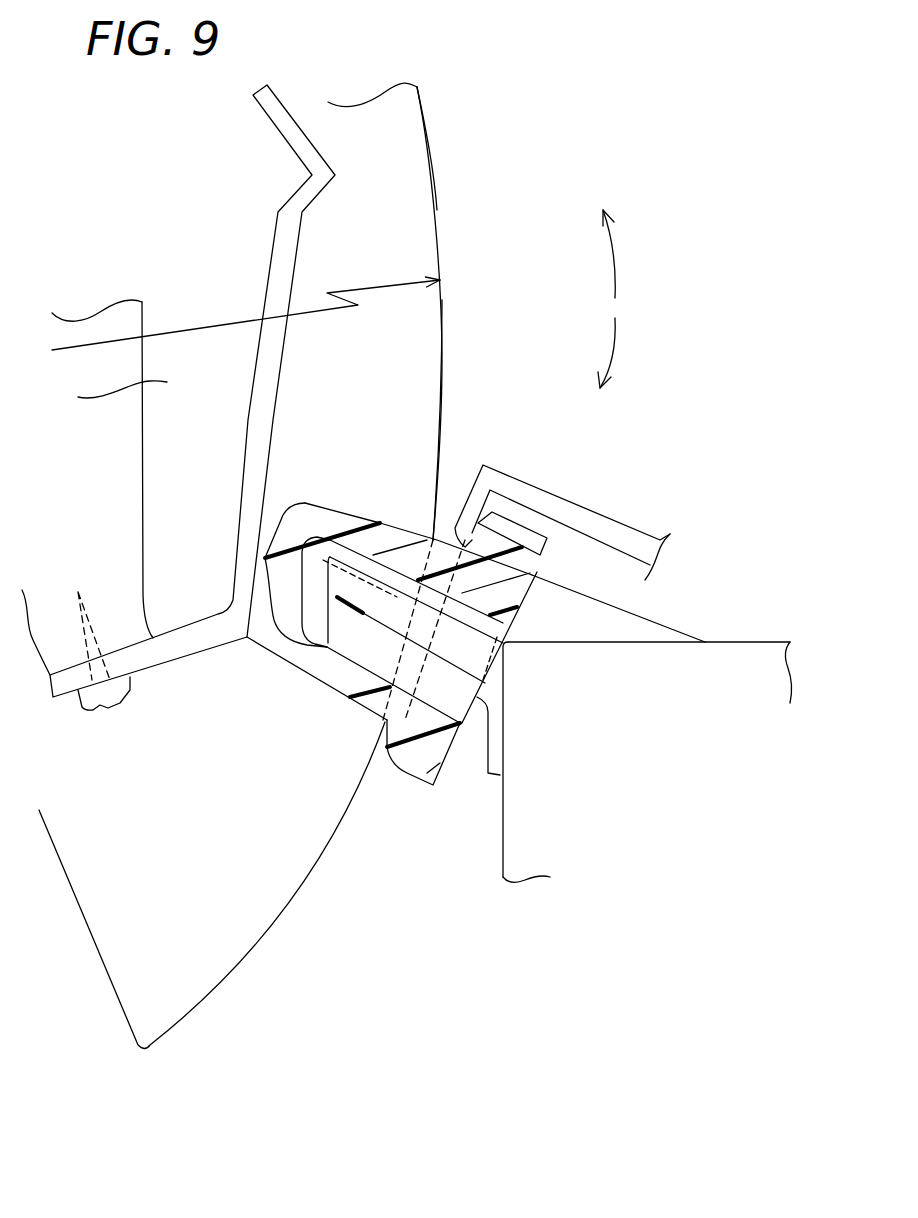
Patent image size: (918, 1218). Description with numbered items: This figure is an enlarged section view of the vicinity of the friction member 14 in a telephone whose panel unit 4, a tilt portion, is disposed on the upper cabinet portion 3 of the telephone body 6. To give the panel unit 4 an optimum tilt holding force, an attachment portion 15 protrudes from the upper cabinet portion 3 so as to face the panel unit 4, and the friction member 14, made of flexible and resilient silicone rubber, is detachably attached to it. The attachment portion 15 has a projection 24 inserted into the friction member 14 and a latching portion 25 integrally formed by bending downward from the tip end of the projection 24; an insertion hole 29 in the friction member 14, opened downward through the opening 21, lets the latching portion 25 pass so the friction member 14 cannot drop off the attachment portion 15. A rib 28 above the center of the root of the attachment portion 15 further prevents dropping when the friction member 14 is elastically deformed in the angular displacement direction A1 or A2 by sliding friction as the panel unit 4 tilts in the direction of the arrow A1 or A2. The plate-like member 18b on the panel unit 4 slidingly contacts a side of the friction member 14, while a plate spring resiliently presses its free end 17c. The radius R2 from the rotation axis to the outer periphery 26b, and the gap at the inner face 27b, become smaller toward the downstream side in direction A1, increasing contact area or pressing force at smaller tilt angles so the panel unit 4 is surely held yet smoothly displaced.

The upper cabinet portion 3 is at (742, 665).
The panel unit 4 is at (173, 391).
The telephone body 6 is at (656, 785).
The friction member 14 is at (315, 527).
The attachment portion 15 is at (367, 593).
The free end 17c is at (277, 528).
The plate-like member 18b is at (422, 228).
The opening 21 is at (248, 640).
The projection 24 is at (445, 540).
The latching portion 25 is at (303, 630).
The outer periphery 26b is at (443, 350).
The inner face 27b is at (420, 165).
The rib 28 is at (584, 522).
The insertion hole 29 is at (357, 655).
The radius R2 is at (357, 290).
The angular displacement direction A1 is at (613, 257).
The angular displacement direction A2 is at (613, 343).